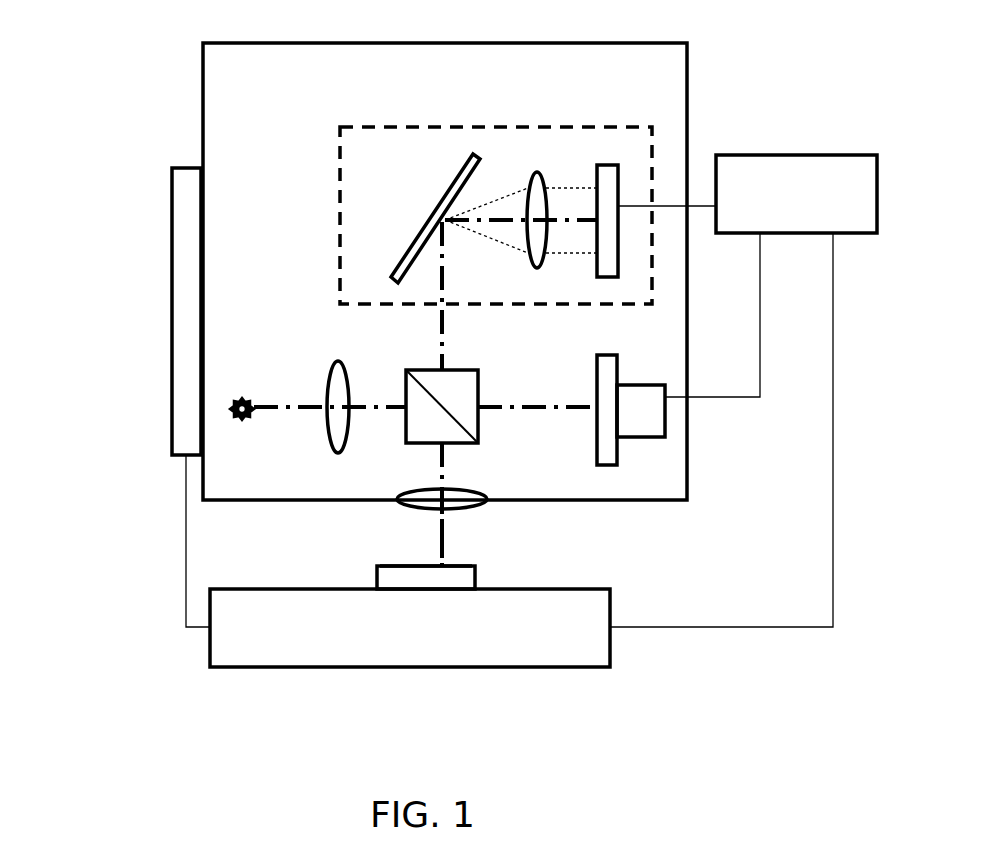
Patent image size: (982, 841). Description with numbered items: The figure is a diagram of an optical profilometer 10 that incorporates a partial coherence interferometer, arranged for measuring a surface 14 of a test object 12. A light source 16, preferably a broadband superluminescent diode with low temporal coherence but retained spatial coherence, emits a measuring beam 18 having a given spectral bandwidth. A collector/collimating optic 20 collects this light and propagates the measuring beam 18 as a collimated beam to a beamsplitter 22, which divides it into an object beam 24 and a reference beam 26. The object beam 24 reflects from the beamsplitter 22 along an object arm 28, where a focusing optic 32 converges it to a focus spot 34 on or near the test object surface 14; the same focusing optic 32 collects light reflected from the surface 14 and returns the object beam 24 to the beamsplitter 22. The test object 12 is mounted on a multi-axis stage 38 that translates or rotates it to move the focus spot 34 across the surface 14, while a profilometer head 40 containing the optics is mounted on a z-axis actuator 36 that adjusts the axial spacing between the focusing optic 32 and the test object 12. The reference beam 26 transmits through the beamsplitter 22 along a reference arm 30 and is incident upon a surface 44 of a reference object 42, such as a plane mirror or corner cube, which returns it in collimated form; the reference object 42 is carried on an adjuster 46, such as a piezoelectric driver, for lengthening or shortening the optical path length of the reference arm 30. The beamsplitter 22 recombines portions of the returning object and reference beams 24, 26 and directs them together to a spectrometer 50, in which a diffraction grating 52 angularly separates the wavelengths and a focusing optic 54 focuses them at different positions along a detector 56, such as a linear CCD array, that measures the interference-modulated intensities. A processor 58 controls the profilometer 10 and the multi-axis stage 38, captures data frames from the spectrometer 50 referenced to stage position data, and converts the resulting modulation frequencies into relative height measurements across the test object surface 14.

The optical profilometer 10 is at (148, 120).
The test object 12 is at (478, 577).
The test object surface 14 is at (392, 566).
The light source 16 is at (241, 396).
The measuring beam 18 is at (277, 418).
The collector/collimating optic 20 is at (331, 366).
The beamsplitter 22 is at (406, 372).
The object beam 24 is at (440, 465).
The reference beam 26 is at (537, 422).
The object arm 28 is at (365, 482).
The reference arm 30 is at (570, 458).
The focusing optic 32 is at (488, 504).
The focus spot 34 is at (445, 566).
The z-axis actuator 36 is at (172, 298).
The multi-axis stage 38 is at (410, 628).
The profilometer head 40 is at (687, 92).
The reference object 42 is at (602, 417).
The reference surface 44 is at (597, 378).
The adjuster 46 is at (637, 437).
The spectrometer 50 is at (439, 122).
The diffraction grating 52 is at (411, 232).
The focusing optic 54 is at (530, 264).
The detector 56 is at (603, 165).
The processor 58 is at (743, 391).